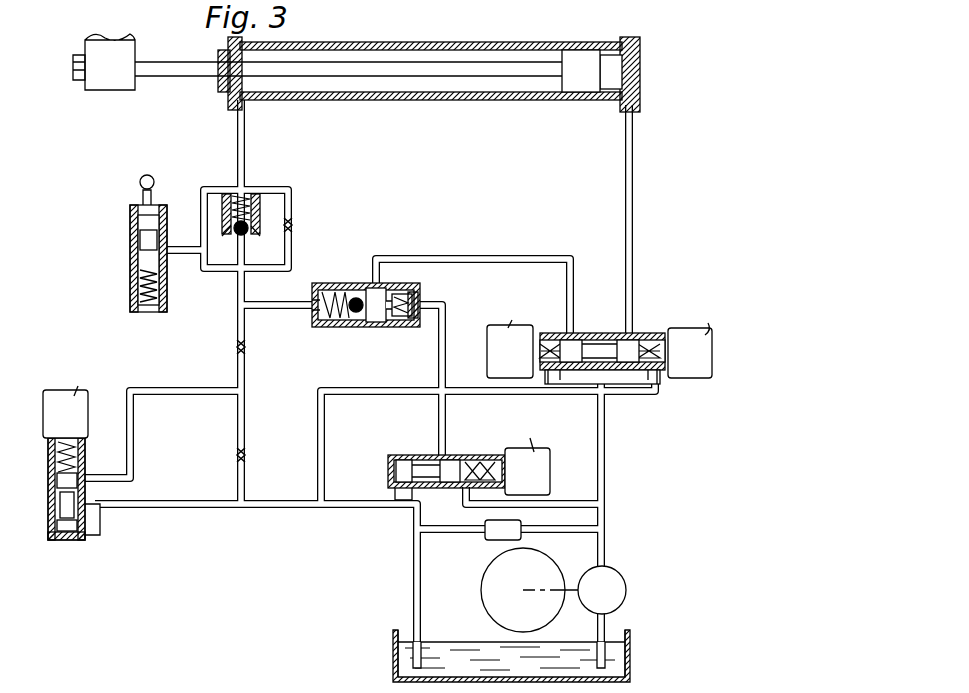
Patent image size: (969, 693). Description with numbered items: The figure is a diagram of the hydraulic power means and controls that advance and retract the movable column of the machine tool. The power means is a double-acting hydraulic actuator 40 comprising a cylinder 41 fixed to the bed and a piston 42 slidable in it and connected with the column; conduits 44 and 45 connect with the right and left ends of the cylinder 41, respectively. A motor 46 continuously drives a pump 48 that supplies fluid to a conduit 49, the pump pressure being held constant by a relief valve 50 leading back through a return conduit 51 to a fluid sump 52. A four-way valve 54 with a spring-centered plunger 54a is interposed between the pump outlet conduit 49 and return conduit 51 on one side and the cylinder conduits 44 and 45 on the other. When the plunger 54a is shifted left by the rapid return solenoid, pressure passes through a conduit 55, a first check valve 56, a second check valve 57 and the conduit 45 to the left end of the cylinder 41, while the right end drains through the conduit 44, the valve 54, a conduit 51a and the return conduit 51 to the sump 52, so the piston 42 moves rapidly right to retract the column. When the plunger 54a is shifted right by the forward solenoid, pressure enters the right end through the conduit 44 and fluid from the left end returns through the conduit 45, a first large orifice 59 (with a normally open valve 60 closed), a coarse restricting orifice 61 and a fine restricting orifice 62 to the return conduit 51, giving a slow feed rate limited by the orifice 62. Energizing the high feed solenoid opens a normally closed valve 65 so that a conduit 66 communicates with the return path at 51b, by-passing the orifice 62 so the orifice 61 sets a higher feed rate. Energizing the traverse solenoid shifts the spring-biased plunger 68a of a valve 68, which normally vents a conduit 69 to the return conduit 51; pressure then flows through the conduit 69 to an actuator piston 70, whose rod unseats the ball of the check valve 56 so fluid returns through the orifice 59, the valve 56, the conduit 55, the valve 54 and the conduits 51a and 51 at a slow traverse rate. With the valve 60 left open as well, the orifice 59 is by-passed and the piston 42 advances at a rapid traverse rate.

The hydraulic actuator 40 is at (504, 101).
The cylinder 41 is at (437, 46).
The piston 42 is at (586, 93).
The conduit 44 is at (633, 196).
The conduit 45 is at (237, 149).
The motor 46 is at (482, 575).
The pump 48 is at (627, 598).
The conduit 49 is at (605, 470).
The relief valve 50 is at (488, 539).
The return conduit 51 is at (413, 586).
The conduit 51a is at (645, 392).
The conduit 51b is at (176, 508).
The fluid sump 52 is at (393, 637).
The four-way valve 54 is at (642, 320).
The valve plunger 54a is at (590, 340).
The conduit 55 is at (484, 258).
The first check valve 56 is at (352, 296).
The second check valve 57 is at (250, 216).
The first large orifice 59 is at (292, 226).
The normally open valve 60 is at (130, 262).
The coarse restricting orifice 61 is at (237, 347).
The fine restricting orifice 62 is at (237, 455).
The normally closed valve 65 is at (48, 480).
The conduit 66 is at (192, 391).
The valve 68 is at (472, 450).
The valve plunger 68a is at (402, 466).
The conduit 69 is at (446, 425).
The actuator piston 70 is at (416, 304).